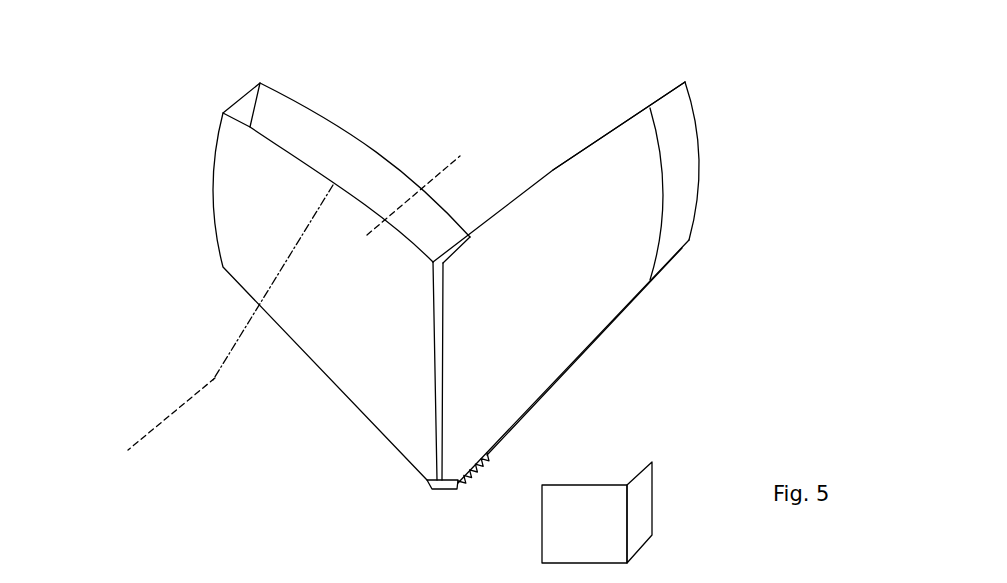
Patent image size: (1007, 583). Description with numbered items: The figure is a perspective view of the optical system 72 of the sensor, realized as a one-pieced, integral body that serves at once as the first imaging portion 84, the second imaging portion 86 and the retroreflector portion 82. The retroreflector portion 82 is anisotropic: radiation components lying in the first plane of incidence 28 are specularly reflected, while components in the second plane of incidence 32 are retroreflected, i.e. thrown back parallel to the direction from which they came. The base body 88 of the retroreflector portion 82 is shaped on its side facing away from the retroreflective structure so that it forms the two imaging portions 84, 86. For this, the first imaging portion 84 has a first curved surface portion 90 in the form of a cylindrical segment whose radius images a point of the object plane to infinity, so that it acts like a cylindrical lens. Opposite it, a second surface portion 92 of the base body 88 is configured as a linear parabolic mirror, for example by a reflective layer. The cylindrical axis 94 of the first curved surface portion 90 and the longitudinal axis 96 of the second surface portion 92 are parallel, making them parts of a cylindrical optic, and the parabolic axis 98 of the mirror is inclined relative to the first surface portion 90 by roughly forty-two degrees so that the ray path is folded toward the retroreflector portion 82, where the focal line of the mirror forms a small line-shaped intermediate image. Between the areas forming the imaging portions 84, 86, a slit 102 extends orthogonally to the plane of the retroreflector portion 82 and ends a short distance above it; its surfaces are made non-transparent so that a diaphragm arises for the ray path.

The first plane of incidence 28 is at (640, 497).
The second plane of incidence 32 is at (550, 512).
The optical system 72 is at (671, 73).
The retroreflector portion 82 is at (435, 502).
The first imaging portion 84 is at (325, 100).
The second imaging portion 86 is at (606, 248).
The base body 88 is at (601, 355).
The first curved surface portion 90 is at (262, 265).
The second surface portion 92 is at (350, 152).
The cylindrical axis 94 is at (465, 150).
The longitudinal axis 96 is at (185, 403).
The parabolic axis 98 is at (228, 343).
The slit 102 is at (457, 239).